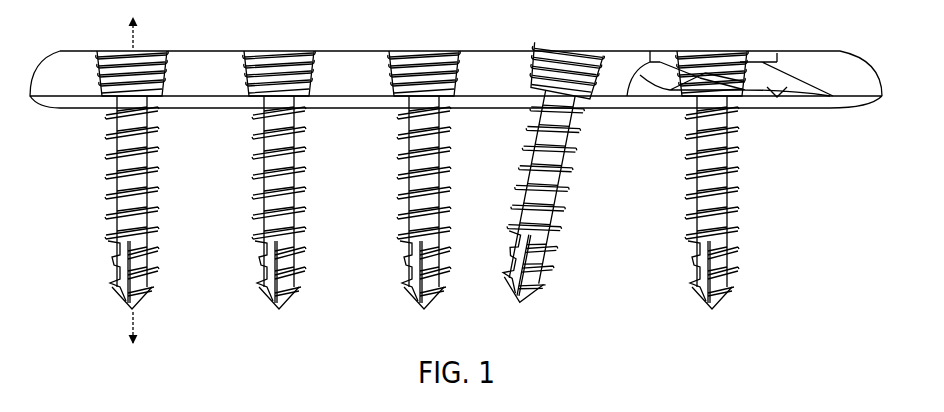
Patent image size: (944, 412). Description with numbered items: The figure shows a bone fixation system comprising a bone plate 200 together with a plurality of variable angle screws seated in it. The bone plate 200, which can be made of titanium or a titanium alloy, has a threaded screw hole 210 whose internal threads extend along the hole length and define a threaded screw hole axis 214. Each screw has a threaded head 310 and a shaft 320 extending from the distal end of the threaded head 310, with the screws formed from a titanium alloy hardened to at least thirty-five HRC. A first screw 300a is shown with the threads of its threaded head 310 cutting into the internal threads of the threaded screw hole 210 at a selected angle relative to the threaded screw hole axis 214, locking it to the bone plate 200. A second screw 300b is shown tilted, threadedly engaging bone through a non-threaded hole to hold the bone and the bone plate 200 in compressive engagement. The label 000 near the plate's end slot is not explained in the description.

The bone plate 200 is at (62, 71).
The threaded screw hole 210 is at (318, 70).
The threaded screw hole axis 214 is at (134, 46).
The threaded head 310 is at (403, 85).
The shaft 320 is at (394, 234).
The first screw 300a is at (749, 160).
The second screw 300b is at (580, 182).
The plate slot 000 is at (768, 54).